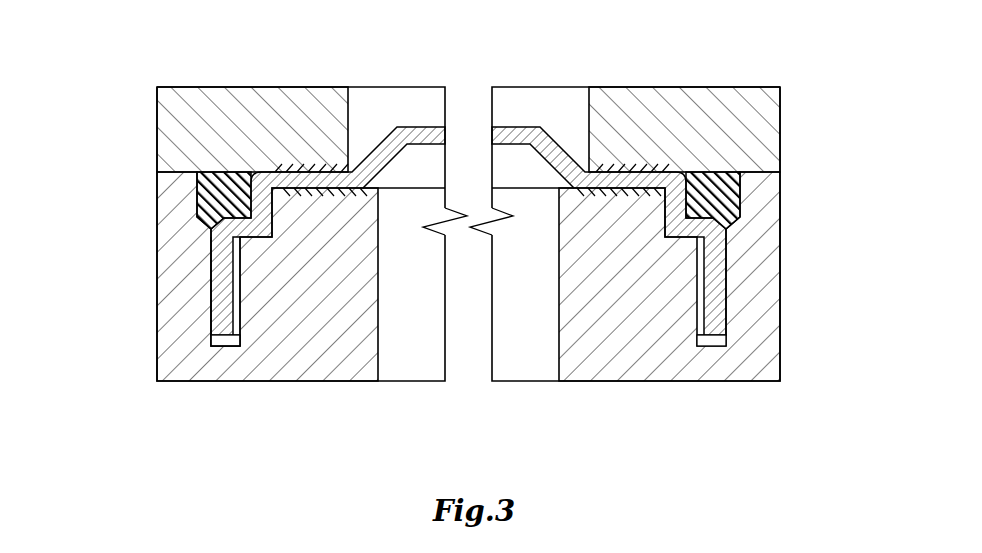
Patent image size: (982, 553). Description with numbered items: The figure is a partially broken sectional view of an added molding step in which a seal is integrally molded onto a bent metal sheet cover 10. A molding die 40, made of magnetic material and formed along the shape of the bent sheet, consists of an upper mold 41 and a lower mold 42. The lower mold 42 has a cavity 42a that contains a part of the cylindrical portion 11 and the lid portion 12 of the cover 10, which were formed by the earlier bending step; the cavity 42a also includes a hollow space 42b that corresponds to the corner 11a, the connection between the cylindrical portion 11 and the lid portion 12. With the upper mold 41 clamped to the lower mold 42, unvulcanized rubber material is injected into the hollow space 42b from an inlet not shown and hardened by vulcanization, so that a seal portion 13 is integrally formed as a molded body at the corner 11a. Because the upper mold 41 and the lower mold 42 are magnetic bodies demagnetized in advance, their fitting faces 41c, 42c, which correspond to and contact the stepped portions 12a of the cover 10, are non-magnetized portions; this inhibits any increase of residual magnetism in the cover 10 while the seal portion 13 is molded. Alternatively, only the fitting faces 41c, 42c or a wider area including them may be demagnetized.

The cover 10 is at (551, 122).
The cylindrical portion 11 is at (718, 325).
The corner 11a is at (712, 171).
The lid portion 12 is at (416, 132).
The stepped portions 12a is at (633, 171).
The seal portion 13 is at (228, 180).
The molding die 40 is at (48, 148).
The upper mold 41 is at (157, 152).
The fitting face 41c is at (305, 170).
The lower mold 42 is at (157, 255).
The cavity 42a is at (237, 328).
The hollow space 42b is at (743, 192).
The fitting face 42c is at (327, 190).